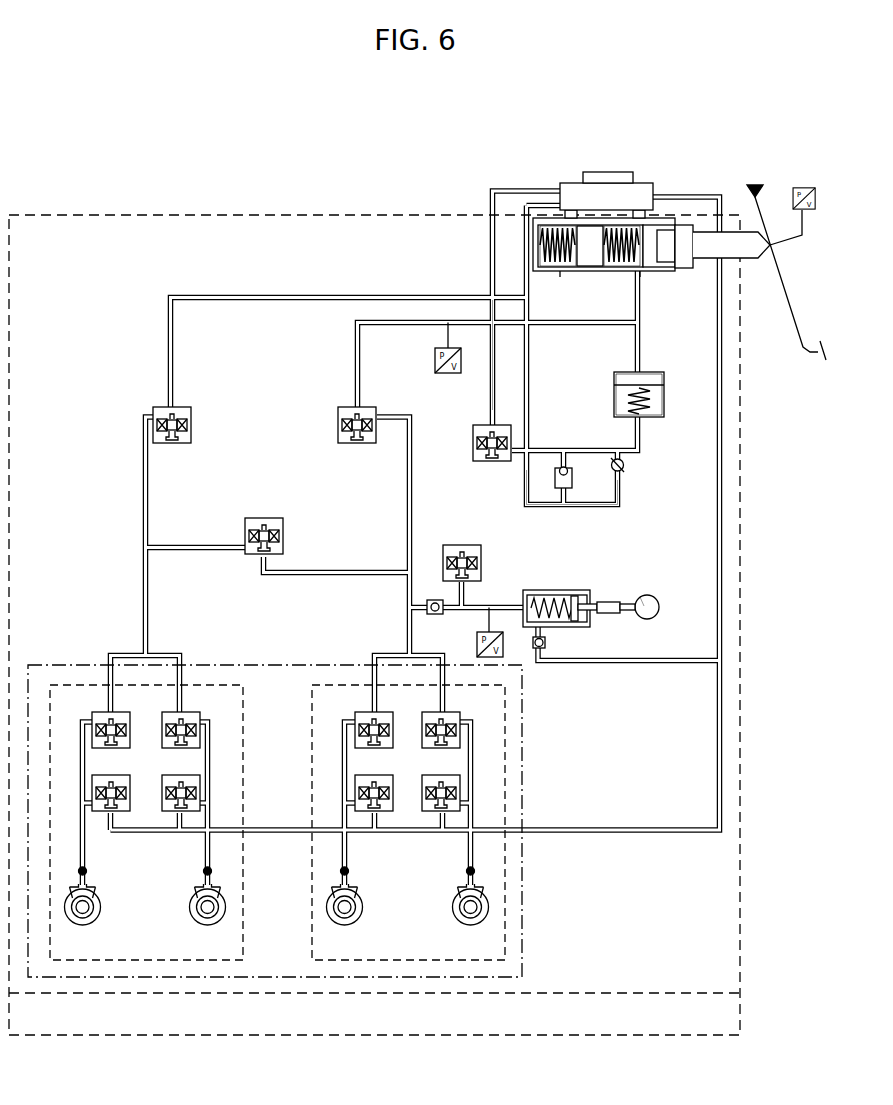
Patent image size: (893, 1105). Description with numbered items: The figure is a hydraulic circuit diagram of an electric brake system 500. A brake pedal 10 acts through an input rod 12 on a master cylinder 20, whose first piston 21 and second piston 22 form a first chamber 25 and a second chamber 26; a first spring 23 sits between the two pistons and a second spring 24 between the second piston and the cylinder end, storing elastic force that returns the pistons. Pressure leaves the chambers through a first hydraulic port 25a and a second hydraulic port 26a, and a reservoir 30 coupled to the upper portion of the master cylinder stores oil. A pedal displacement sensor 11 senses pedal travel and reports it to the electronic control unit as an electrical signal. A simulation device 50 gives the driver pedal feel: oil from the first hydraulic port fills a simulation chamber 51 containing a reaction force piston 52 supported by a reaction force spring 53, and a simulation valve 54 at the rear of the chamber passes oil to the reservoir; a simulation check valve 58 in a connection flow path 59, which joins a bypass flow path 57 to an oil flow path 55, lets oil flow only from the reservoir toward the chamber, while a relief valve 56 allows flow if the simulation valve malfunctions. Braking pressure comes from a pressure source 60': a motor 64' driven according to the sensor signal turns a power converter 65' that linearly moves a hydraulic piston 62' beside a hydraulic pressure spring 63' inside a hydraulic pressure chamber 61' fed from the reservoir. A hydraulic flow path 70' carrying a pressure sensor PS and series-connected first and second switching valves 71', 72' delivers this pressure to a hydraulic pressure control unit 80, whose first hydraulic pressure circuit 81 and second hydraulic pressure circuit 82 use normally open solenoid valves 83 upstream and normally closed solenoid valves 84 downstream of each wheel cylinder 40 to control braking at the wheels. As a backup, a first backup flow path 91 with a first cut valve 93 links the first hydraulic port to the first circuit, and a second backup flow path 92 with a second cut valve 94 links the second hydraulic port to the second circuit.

The electric brake system 500 is at (338, 198).
The brake pedal 10 is at (787, 285).
The pedal displacement sensor 11 is at (802, 190).
The input rod 12 is at (743, 259).
The master cylinder 20 is at (527, 210).
The first piston 21 is at (653, 235).
The second piston 22 is at (587, 262).
The first spring 23 is at (626, 262).
The second spring 24 is at (540, 245).
The first chamber 25 is at (624, 228).
The first hydraulic port 25a is at (645, 272).
The second chamber 26 is at (552, 228).
The second hydraulic port 26a is at (560, 272).
The reservoir 30 is at (568, 183).
The wheel cylinder 40 is at (196, 886).
The simulation device 50 is at (617, 517).
The simulation chamber 51 is at (657, 412).
The reaction force piston 52 is at (664, 380).
The reaction force spring 53 is at (650, 400).
The simulation valve 54 is at (473, 440).
The oil flow path 55 is at (520, 442).
The relief valve 56 is at (558, 489).
The bypass flow path 57 is at (568, 489).
The simulation check valve 58 is at (625, 467).
The connection flow path 59 is at (620, 495).
The pressure source 60' is at (667, 583).
The hydraulic pressure chamber 61' is at (547, 586).
The hydraulic piston 62' is at (629, 644).
The hydraulic pressure spring 63' is at (554, 583).
The motor 64' is at (640, 628).
The power converter 65' is at (605, 582).
The hydraulic flow path 70' is at (467, 587).
The first switching valve 71' is at (462, 541).
The second switching valve 72' is at (290, 536).
The hydraulic pressure control unit 80 is at (275, 663).
The first hydraulic pressure circuit 81 is at (328, 685).
The second hydraulic pressure circuit 82 is at (210, 685).
The normally open type solenoid valve 83 is at (355, 718).
The normally closed type solenoid valve 84 is at (355, 781).
The first backup flow path 91 is at (390, 326).
The second backup flow path 92 is at (324, 295).
The first cut valve 93 is at (338, 430).
The second cut valve 94 is at (180, 411).
The pressure sensor PS is at (477, 646).